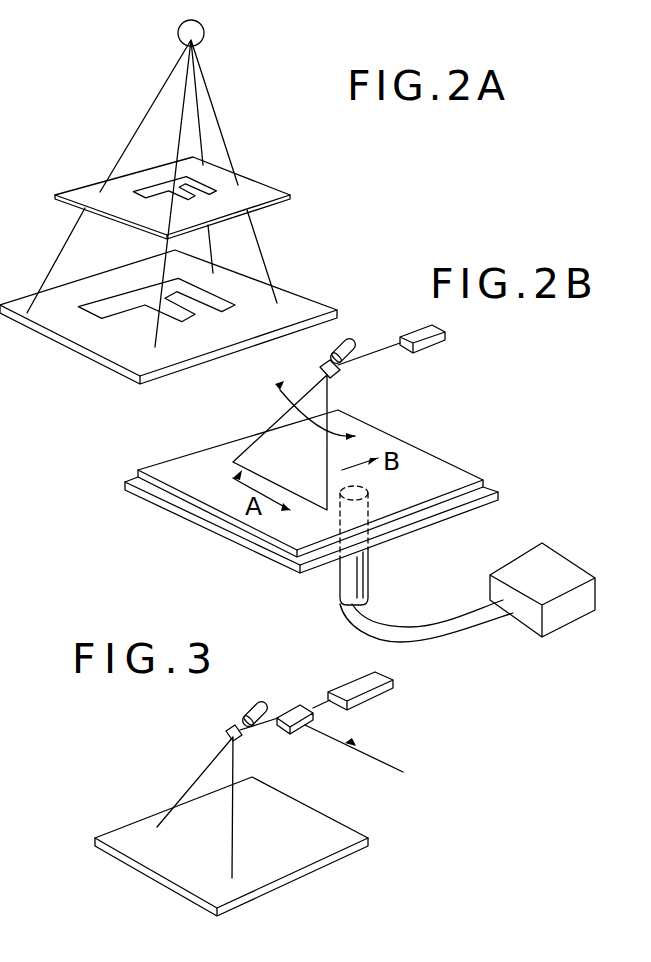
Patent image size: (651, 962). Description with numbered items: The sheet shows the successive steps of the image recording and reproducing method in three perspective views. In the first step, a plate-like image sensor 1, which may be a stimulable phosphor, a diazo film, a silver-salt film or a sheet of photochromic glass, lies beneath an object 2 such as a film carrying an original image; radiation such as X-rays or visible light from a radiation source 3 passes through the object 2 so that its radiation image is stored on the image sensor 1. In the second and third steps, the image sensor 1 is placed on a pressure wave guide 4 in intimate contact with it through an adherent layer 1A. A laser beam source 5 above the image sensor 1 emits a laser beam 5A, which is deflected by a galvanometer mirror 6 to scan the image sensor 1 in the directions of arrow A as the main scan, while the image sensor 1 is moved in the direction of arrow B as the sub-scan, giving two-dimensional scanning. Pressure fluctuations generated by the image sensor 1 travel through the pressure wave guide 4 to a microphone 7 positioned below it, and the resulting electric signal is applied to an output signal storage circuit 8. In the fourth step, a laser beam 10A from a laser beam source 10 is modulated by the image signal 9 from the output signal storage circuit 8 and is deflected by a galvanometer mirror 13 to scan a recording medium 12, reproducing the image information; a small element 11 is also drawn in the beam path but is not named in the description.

In FIG. 2A, the image sensor 1 is at (303, 303).
In FIG. 2B, the image sensor 1 is at (416, 468).
In FIG. 2B, the adherent layer 1A is at (490, 479).
In FIG. 2A, the object 2 is at (263, 190).
In FIG. 2A, the radiation source 3 is at (179, 34).
In FIG. 2B, the pressure wave guide 4 is at (499, 496).
In FIG. 2B, the laser beam source 5 is at (431, 347).
In FIG. 2B, the laser beam 5A is at (373, 362).
In FIG. 2B, the galvanometer mirror 6 is at (320, 368).
In FIG. 2B, the microphone 7 is at (360, 583).
In FIG. 2B, the output signal storage circuit 8 is at (567, 568).
In FIG. 3, the image signal 9 is at (388, 771).
In FIG. 3, the laser beam source 10 is at (381, 695).
In FIG. 3, the laser beam 10A is at (317, 703).
In FIG. 3, the fixed mirror 11 is at (297, 731).
In FIG. 3, the recording medium 12 is at (340, 843).
In FIG. 3, the galvanometer mirror 13 is at (224, 732).